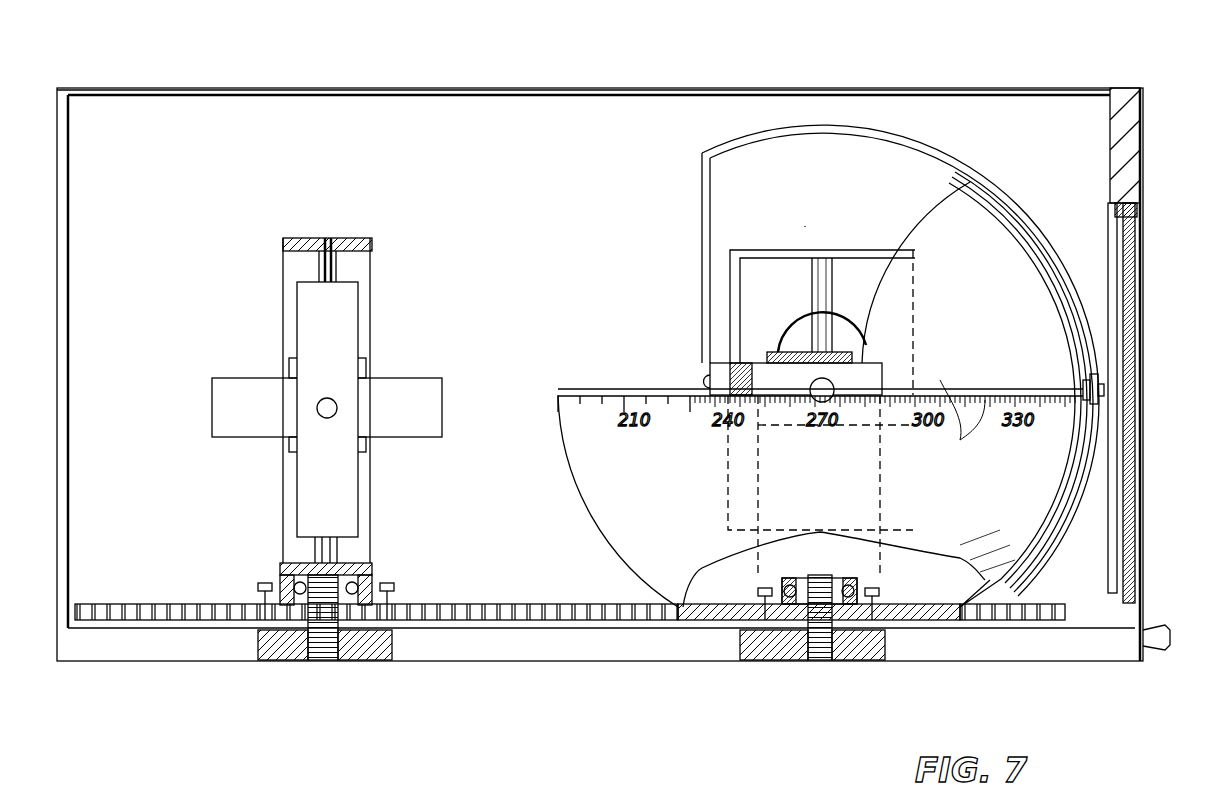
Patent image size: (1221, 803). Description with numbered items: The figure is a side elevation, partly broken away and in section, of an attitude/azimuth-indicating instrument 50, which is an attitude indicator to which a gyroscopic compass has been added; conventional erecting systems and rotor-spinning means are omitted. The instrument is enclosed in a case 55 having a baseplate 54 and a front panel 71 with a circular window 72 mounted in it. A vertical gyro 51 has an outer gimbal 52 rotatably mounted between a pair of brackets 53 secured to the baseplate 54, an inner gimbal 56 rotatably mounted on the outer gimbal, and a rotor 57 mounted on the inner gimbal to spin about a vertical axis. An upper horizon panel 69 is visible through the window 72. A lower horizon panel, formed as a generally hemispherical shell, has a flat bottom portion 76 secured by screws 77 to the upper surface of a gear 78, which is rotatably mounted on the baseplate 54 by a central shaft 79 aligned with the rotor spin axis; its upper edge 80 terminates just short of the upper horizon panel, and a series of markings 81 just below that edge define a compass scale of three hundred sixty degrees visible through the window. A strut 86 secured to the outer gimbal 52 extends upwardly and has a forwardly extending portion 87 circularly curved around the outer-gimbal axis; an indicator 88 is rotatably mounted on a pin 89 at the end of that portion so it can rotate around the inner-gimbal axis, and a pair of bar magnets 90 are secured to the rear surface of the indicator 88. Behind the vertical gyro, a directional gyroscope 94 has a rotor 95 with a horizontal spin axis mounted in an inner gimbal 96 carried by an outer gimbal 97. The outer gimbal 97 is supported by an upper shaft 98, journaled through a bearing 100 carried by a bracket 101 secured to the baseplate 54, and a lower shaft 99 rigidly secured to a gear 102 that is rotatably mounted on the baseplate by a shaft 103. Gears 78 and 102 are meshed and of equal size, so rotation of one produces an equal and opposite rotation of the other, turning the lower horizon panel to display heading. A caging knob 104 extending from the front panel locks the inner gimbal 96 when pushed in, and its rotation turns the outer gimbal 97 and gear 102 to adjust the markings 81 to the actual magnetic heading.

The attitude/azimuth-indicating instrument 50 is at (1167, 88).
The vertical gyro 51 is at (805, 226).
The outer gimbal 52 is at (710, 358).
The brackets 53 is at (795, 312).
The baseplate 54 is at (630, 648).
The case 55 is at (895, 90).
The inner gimbal 56 is at (860, 255).
The rotor 57 is at (788, 335).
The upper horizon panel 69 is at (955, 207).
The front panel 71 is at (1142, 156).
The circular window 72 is at (1140, 270).
The flat bottom portion 76 is at (716, 588).
The screws 77 is at (875, 590).
The gear 78 is at (1003, 612).
The central shaft 79 is at (800, 577).
The upper edge 80 is at (965, 405).
The markings 81 is at (955, 440).
The strut 86 is at (700, 200).
The forwardly extending portion 87 is at (985, 182).
The indicator 88 is at (1092, 345).
The pin 89 is at (1092, 378).
The bar magnets 90 is at (1095, 400).
The directional gyroscope 94 is at (388, 303).
The rotor 95 is at (292, 358).
The inner gimbal 96 is at (443, 412).
The outer gimbal 97 is at (342, 349).
The upper shaft 98 is at (318, 262).
The lower shaft 99 is at (312, 548).
The bearing 100 is at (332, 240).
The bracket 101 is at (374, 246).
The gear 102 is at (507, 602).
The shaft 103 is at (348, 566).
The caging knob 104 is at (1170, 648).